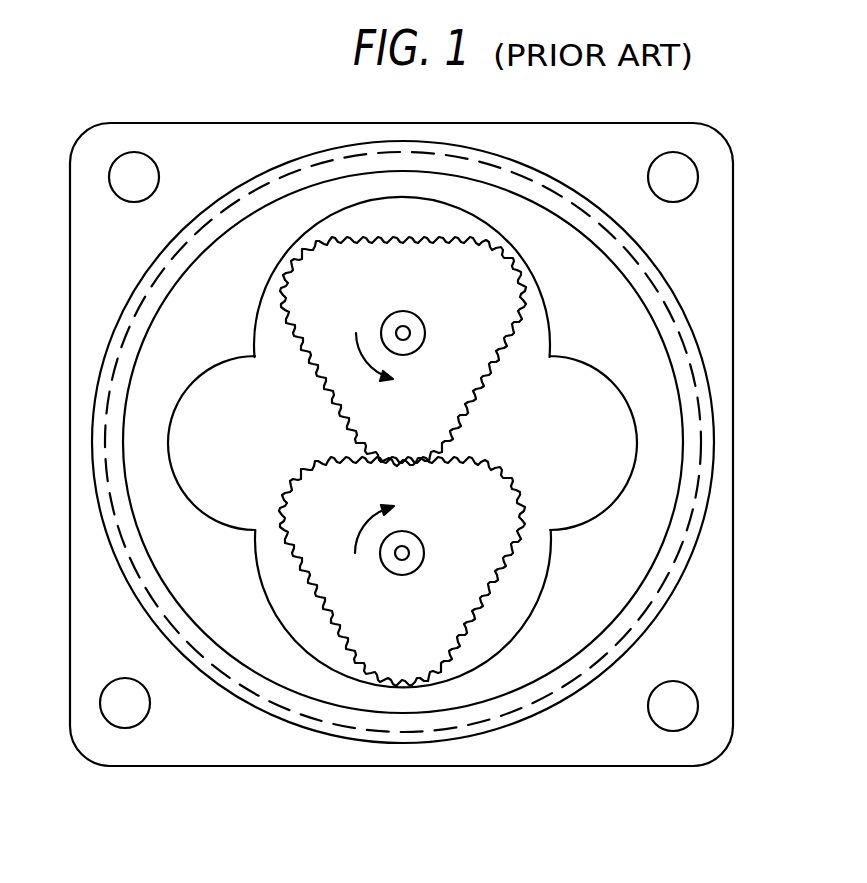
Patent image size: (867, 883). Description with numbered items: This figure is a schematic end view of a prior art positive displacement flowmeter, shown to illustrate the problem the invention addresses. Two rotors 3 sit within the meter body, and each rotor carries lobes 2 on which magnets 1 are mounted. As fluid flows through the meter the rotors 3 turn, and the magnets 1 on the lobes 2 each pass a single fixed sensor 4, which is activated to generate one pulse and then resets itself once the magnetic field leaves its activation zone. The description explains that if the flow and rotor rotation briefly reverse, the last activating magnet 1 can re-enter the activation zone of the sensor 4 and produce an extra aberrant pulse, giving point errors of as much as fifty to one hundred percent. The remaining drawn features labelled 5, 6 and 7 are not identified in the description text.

The magnet 1 is at (526, 461).
The lobe 2 is at (470, 385).
The rotor 3 is at (382, 330).
The sensor 4 is at (193, 718).
The rotation direction arrow 5 is at (365, 372).
The pump casing ring 6 is at (580, 508).
The inlet/outlet port pocket 7 is at (195, 432).